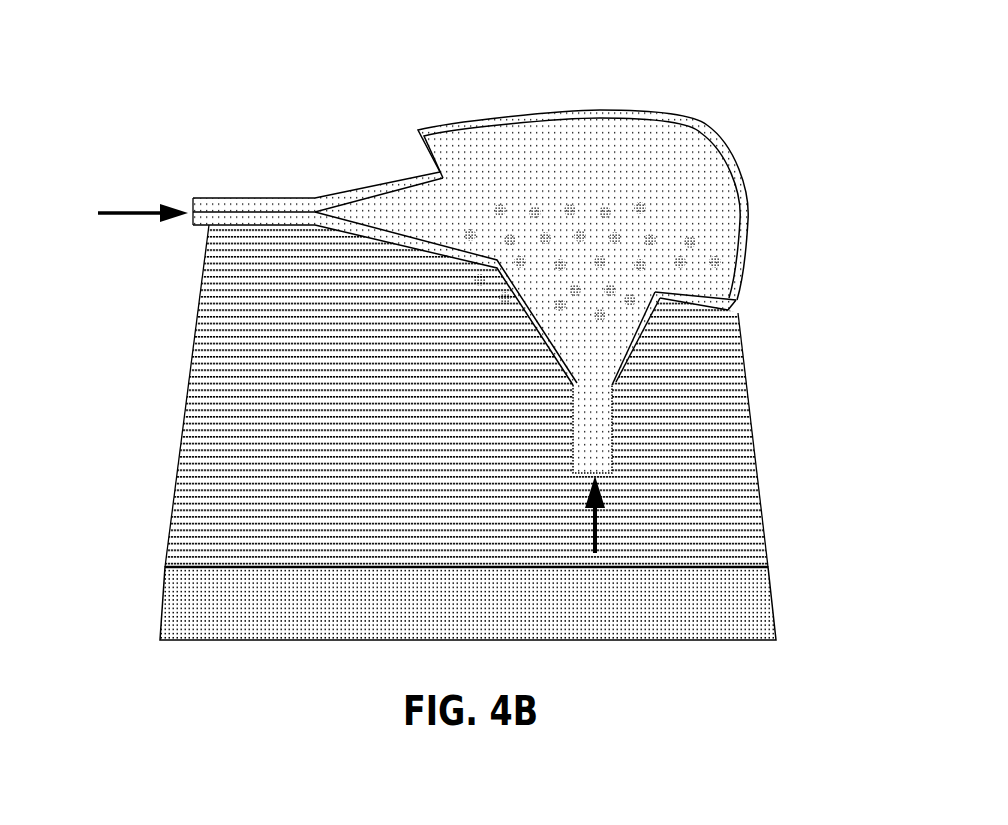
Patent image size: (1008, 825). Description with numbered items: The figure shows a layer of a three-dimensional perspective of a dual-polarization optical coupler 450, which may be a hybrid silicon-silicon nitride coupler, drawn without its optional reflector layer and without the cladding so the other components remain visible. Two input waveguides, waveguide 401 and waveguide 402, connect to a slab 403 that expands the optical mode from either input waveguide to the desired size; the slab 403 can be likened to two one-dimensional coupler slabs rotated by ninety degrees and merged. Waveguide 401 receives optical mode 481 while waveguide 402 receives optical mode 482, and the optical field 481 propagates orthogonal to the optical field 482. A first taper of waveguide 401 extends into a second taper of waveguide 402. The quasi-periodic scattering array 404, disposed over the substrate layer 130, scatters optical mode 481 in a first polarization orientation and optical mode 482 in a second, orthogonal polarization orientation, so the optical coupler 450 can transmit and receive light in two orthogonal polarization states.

The dual-polarization optical coupler 450 is at (464, 340).
The waveguide 401 is at (308, 187).
The slab 403 is at (597, 173).
The scattering array 404 is at (682, 335).
The waveguide 402 is at (633, 380).
The optical mode 481 is at (143, 201).
The optical mode 482 is at (595, 530).
The substrate layer 130 is at (478, 616).